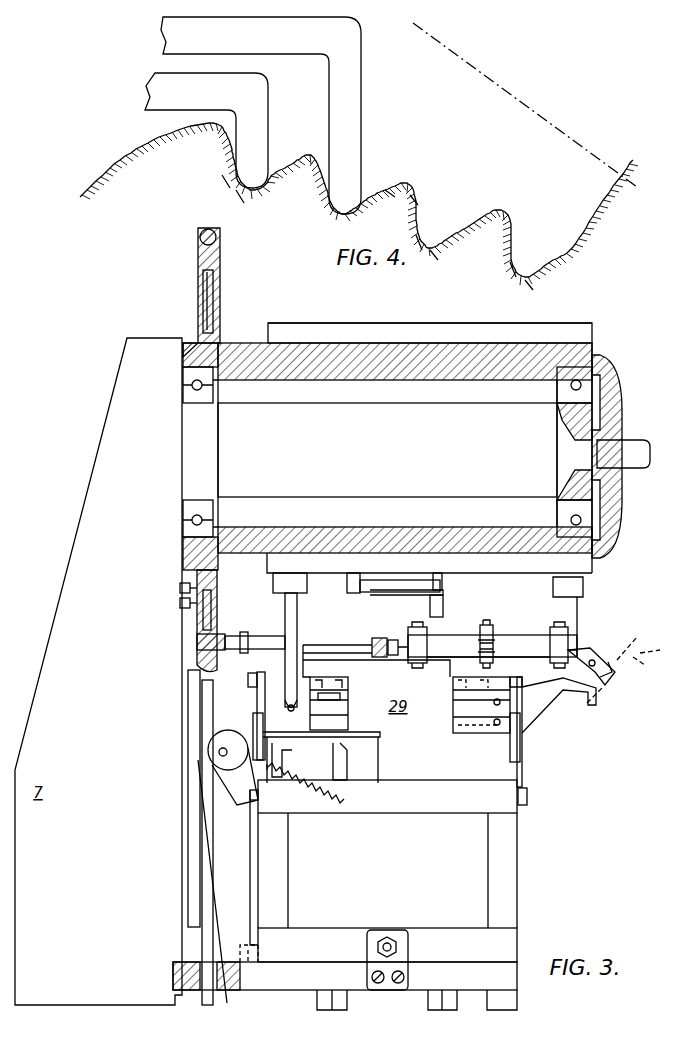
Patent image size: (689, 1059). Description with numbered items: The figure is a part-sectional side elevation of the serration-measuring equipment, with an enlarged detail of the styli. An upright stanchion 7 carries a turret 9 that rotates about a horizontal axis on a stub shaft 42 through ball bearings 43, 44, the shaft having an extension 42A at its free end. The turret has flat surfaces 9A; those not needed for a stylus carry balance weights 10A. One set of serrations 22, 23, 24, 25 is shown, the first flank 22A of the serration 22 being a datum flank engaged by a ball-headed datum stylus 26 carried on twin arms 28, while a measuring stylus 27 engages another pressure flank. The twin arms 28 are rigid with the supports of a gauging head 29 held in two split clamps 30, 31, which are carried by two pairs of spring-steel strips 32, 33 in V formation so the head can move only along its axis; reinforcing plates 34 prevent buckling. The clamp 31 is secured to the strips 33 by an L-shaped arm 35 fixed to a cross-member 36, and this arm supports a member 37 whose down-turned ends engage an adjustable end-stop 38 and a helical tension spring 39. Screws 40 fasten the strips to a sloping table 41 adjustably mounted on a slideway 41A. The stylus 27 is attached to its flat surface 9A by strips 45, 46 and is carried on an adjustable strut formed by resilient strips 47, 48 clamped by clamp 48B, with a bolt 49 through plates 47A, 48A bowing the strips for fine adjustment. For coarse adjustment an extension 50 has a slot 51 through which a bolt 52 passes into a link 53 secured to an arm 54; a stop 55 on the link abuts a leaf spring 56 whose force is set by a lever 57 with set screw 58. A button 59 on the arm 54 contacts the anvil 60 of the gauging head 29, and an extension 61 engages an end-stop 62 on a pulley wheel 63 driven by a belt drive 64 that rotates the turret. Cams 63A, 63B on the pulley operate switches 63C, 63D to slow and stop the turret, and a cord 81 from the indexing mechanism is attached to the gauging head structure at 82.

In FIG. 3, the stanchion 7 is at (98, 671).
In FIG. 3, the turret 9 is at (297, 360).
In FIG. 3, the flat surfaces 9A is at (383, 340).
In FIG. 3, the balance weights 10A is at (440, 340).
In FIG. 4, the serration 22 is at (272, 165).
In FIG. 4, the first flank 22A is at (225, 175).
In FIG. 4, the serration 23 is at (370, 196).
In FIG. 4, the serration 24 is at (432, 240).
In FIG. 4, the serration 25 is at (528, 270).
In FIG. 4, the datum stylus 26 is at (240, 163).
In FIG. 3, the datum stylus 26 is at (600, 687).
In FIG. 4, the measuring stylus 27 is at (348, 138).
In FIG. 3, the measuring stylus 27 is at (613, 672).
In FIG. 3, the twin arms 28 is at (530, 713).
In FIG. 3, the gauging head 29 is at (376, 661).
In FIG. 3, the split clamp 30 is at (453, 707).
In FIG. 3, the split clamp 31 is at (330, 710).
In FIG. 3, the spring-steel strips 32 is at (517, 772).
In FIG. 3, the spring-steel strips 33 is at (257, 702).
In FIG. 3, the reinforcing plates 34 is at (253, 720).
In FIG. 3, the L-shaped arm 35 is at (372, 738).
In FIG. 3, the cross-member 36 is at (247, 677).
In FIG. 3, the member 37 is at (295, 745).
In FIG. 3, the adjustable end-stop 38 is at (337, 777).
In FIG. 3, the helical tension spring 39 is at (310, 787).
In FIG. 3, the screws 40 is at (527, 797).
In FIG. 3, the sloping table 41 is at (420, 798).
In FIG. 3, the slideway 41A is at (292, 977).
In FIG. 3, the stub shaft 42 is at (230, 466).
In FIG. 3, the extension 42A is at (612, 452).
In FIG. 3, the ball bearing 43 is at (196, 519).
In FIG. 3, the ball bearing 44 is at (600, 522).
In FIG. 3, the spring-steel strips 45 is at (577, 610).
In FIG. 3, the spring-steel strips 46 is at (285, 598).
In FIG. 3, the resilient metal strip 47 is at (455, 638).
In FIG. 3, the plate 47A is at (497, 637).
In FIG. 3, the resilient metal strip 48 is at (458, 657).
In FIG. 3, the plate 48A is at (513, 687).
In FIG. 3, the clamp 48B is at (418, 643).
In FIG. 3, the bolt 49 is at (495, 628).
In FIG. 3, the extension 50 is at (375, 640).
In FIG. 3, the slot 51 is at (393, 643).
In FIG. 3, the bolt 52 is at (393, 657).
In FIG. 3, the link 53 is at (350, 657).
In FIG. 3, the arm 54 is at (288, 668).
In FIG. 3, the stop 55 is at (343, 660).
In FIG. 3, the leaf spring 56 is at (353, 607).
In FIG. 3, the lever 57 is at (420, 592).
In FIG. 3, the set screw 58 is at (443, 578).
In FIG. 3, the button 59 is at (297, 707).
In FIG. 3, the anvil 60 is at (300, 773).
In FIG. 3, the extension 61 is at (292, 640).
In FIG. 3, the end-stop 62 is at (262, 640).
In FIG. 3, the pulley wheel 63 is at (195, 558).
In FIG. 3, the cam 63A is at (206, 315).
In FIG. 3, the cam 63B is at (205, 294).
In FIG. 3, the switch 63C is at (180, 590).
In FIG. 3, the switch 63D is at (180, 603).
In FIG. 3, the belt drive 64 is at (207, 698).
In FIG. 3, the cord 81 is at (217, 935).
In FIG. 3, the attachment point 82 is at (240, 735).